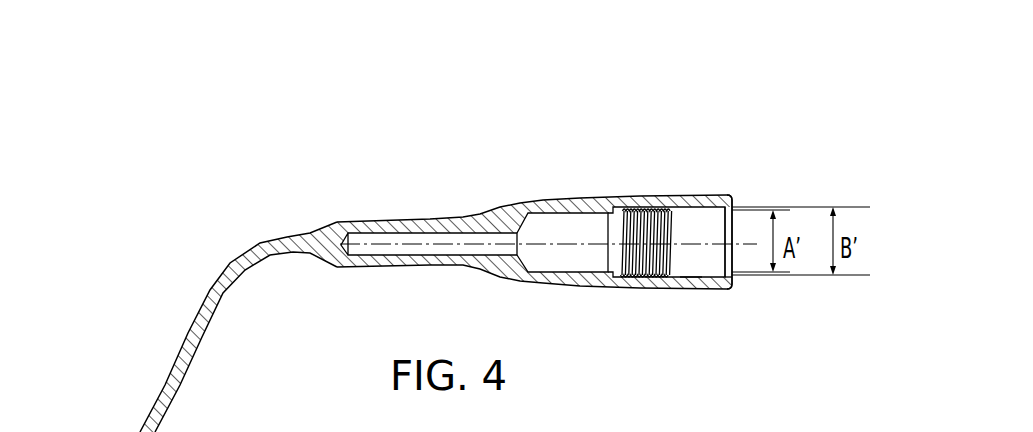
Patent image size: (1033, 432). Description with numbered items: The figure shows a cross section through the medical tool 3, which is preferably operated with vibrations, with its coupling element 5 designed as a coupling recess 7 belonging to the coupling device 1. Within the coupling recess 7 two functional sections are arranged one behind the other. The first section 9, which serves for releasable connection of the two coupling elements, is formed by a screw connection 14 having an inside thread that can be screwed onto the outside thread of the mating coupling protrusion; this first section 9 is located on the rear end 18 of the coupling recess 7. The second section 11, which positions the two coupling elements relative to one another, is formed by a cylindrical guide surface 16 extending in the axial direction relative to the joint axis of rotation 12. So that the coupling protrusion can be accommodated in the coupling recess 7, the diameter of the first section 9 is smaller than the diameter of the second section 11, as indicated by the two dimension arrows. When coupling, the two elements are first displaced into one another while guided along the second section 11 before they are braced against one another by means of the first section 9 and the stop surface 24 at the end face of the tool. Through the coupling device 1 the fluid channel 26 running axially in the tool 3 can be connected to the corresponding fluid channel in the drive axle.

The coupling device 1 is at (466, 327).
The medical tool 3 is at (578, 204).
The coupling element 5 is at (733, 187).
The coupling recess 7 is at (695, 227).
The first section 9 is at (631, 286).
The second section 11 is at (708, 316).
The joint axis of rotation 12 is at (557, 248).
The screw connection 14 is at (648, 275).
The cylindrical guide surface 16 is at (680, 277).
The rear end 18 is at (631, 234).
The stop surface 24 is at (730, 288).
The fluid channel 26 is at (485, 228).